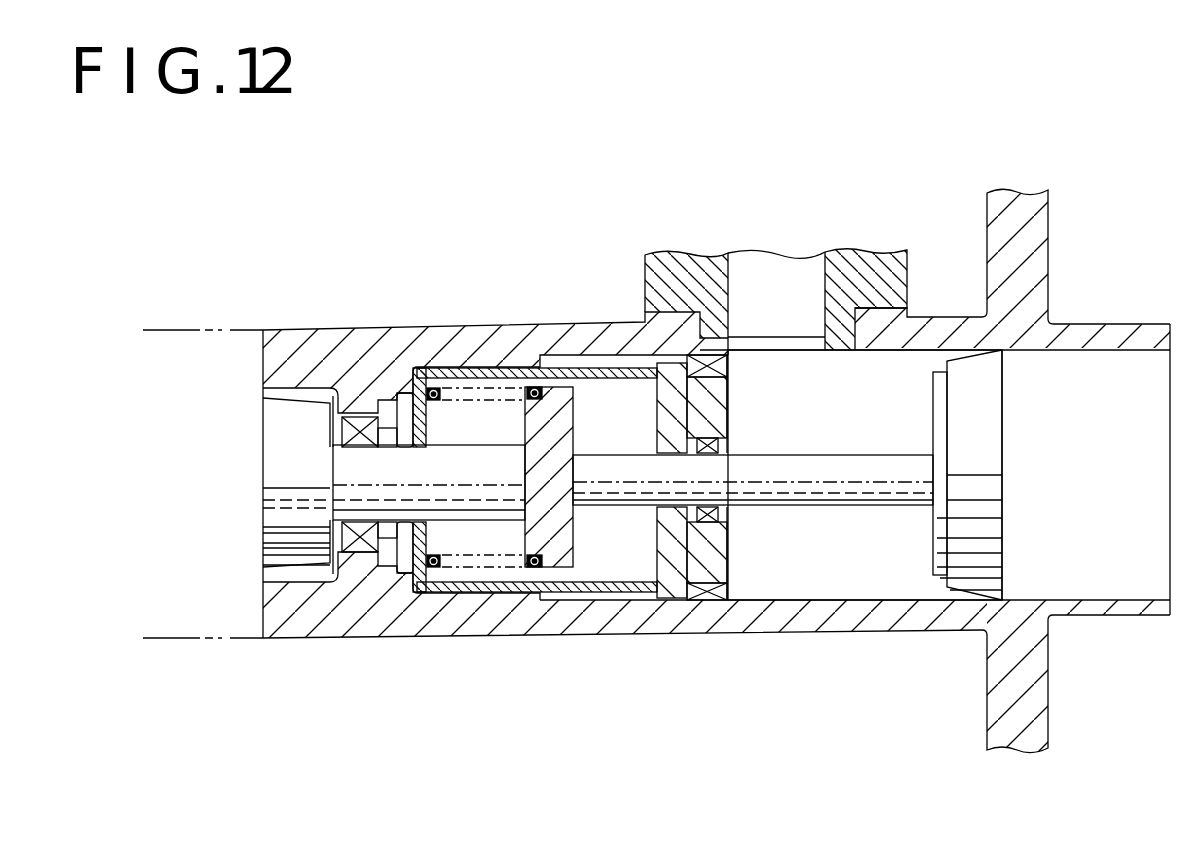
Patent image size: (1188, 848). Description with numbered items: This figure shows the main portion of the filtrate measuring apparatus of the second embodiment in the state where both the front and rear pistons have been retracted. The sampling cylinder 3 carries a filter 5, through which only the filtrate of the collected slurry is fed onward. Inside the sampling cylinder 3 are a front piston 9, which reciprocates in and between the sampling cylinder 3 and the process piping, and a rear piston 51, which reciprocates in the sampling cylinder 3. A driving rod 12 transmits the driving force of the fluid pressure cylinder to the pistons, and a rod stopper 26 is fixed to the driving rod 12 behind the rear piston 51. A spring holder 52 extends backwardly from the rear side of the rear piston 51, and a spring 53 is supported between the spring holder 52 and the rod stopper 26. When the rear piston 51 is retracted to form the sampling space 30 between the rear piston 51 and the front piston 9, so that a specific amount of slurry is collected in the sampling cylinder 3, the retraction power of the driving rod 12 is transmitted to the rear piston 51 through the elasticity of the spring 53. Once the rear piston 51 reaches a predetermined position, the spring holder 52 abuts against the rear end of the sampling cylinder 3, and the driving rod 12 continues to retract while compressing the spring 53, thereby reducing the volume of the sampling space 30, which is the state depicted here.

The sampling cylinder 3 is at (350, 347).
The filter 5 is at (785, 335).
The front piston 9 is at (972, 576).
The driving rod 12 is at (823, 472).
The rod stopper 26 is at (556, 556).
The sampling space 30 is at (858, 557).
The rear piston 51 is at (706, 570).
The spring holder 52 is at (460, 593).
The spring 53 is at (423, 593).